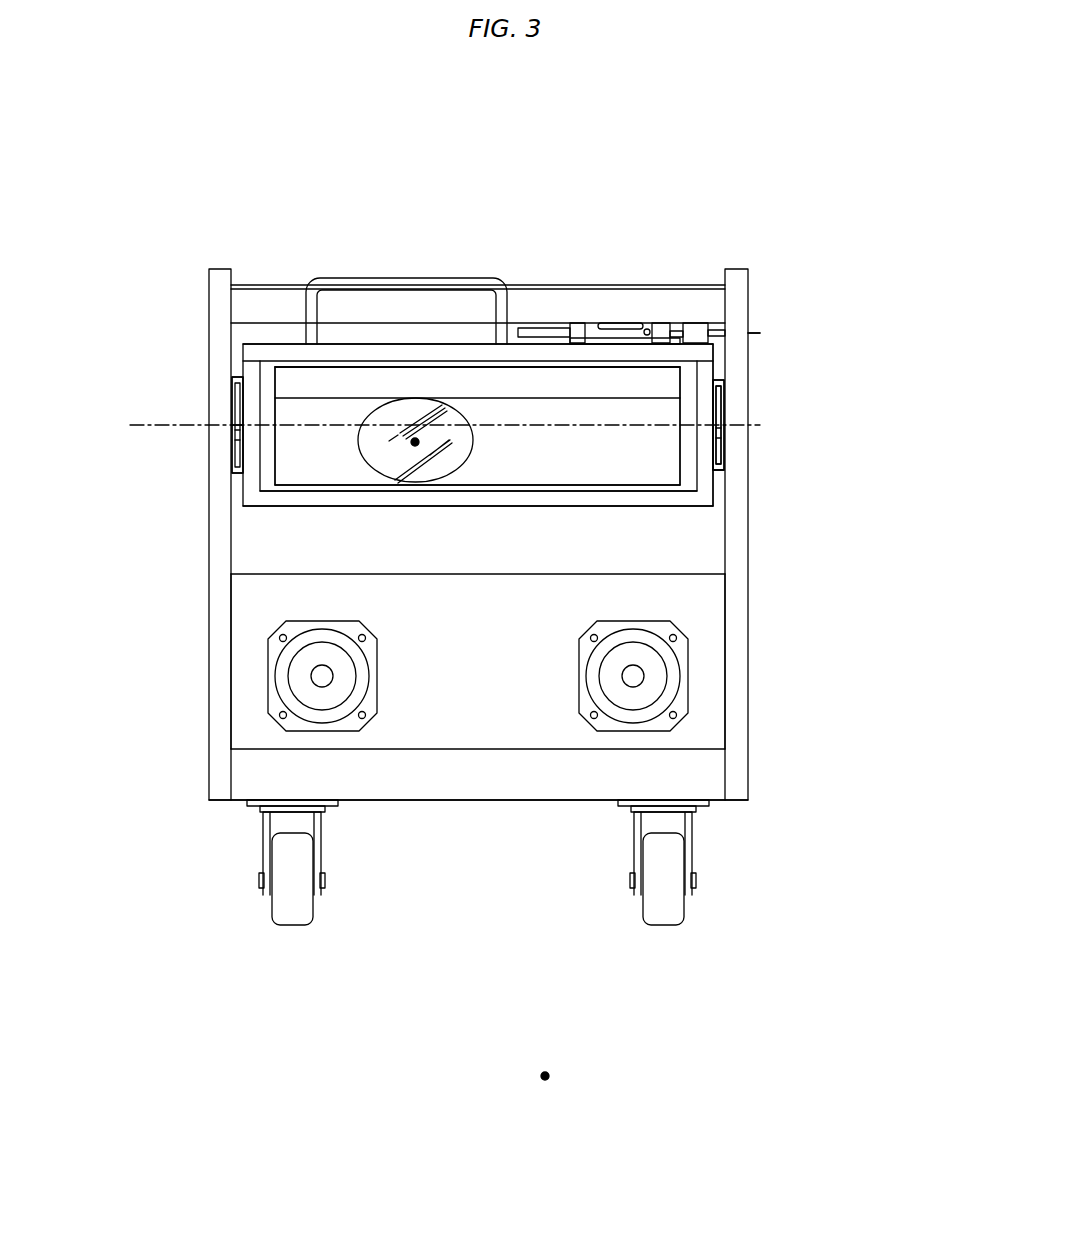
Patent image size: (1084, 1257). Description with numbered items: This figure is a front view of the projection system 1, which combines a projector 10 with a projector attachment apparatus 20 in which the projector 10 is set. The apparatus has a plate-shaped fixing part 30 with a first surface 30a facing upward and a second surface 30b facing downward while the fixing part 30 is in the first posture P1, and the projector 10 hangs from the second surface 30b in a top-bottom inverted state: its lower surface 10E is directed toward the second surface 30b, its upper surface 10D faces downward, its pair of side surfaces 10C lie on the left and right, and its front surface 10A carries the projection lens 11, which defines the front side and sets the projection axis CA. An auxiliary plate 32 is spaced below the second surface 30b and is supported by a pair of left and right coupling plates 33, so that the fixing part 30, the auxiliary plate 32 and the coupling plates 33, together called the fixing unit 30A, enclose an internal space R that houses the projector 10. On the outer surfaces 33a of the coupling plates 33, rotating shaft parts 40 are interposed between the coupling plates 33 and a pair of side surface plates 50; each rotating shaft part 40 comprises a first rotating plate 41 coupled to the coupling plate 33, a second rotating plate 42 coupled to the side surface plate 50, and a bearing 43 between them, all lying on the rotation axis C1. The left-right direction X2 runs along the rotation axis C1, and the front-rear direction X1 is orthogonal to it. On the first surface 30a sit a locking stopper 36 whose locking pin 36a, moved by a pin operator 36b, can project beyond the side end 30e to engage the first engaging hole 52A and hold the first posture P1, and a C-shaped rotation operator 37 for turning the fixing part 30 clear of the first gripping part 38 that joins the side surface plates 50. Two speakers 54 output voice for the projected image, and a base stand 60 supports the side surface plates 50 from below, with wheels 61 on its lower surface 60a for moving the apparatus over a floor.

The projection system 1 is at (814, 168).
The projector 10 is at (573, 385).
The front surface 10A is at (265, 482).
The side surfaces 10C is at (275, 457).
The upper surface 10D is at (553, 488).
The lower surface 10E is at (343, 365).
The projection lens 11 is at (432, 467).
The projector attachment apparatus 20 is at (219, 262).
The fixing part 30 is at (535, 328).
The fixing unit 30A is at (449, 338).
The first surface 30a is at (365, 338).
The second surface 30b is at (449, 374).
The side end 30e is at (714, 352).
The auxiliary plate 32 is at (480, 507).
The coupling plates 33 is at (260, 477).
The outer surfaces 33a is at (240, 437).
The locking stopper 36 is at (690, 328).
The locking pin 36a is at (720, 325).
The pin operator 36b is at (649, 328).
The rotation operator 37 is at (430, 276).
The first gripping part 38 is at (620, 323).
The rotating shaft parts 40 is at (235, 377).
The first rotating plates 41 is at (716, 473).
The second rotating plates 42 is at (725, 410).
The bearings 43 is at (722, 441).
The side surface plates 50 is at (209, 665).
The first engaging hole 52A is at (746, 331).
The speakers 54 is at (300, 678).
The base stand 60 is at (500, 775).
The lower surface 60a is at (715, 803).
The wheels 61 is at (292, 907).
The rotation axis C1 is at (158, 420).
The projection axis CA is at (413, 436).
The first posture P1 is at (275, 338).
The internal space R is at (305, 458).
The front-rear direction X1 is at (549, 1078).
The left-right direction X2 is at (520, 1076).